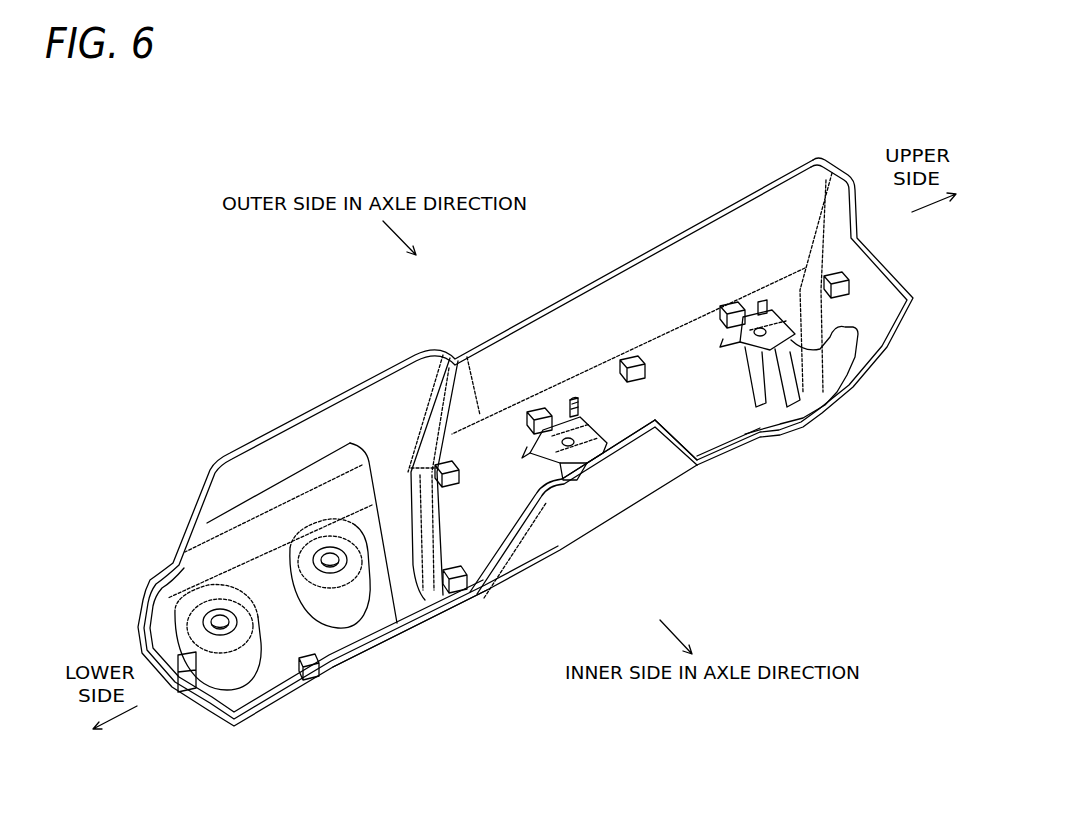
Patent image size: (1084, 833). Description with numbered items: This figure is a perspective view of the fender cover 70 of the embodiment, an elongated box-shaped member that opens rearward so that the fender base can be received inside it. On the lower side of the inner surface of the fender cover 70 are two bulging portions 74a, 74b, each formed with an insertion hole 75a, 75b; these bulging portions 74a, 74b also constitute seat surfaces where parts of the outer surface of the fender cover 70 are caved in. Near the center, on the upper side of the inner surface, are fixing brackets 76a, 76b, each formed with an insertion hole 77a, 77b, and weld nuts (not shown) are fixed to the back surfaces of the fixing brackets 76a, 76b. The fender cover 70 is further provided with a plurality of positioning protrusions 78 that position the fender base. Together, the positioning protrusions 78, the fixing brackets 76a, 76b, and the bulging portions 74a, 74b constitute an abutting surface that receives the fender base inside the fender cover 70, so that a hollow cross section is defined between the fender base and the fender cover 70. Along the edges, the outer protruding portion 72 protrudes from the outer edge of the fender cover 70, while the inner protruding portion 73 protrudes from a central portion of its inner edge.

The fender cover 70 is at (333, 343).
The outer protruding portion 72 is at (481, 363).
The inner protruding portion 73 is at (603, 490).
The bulging portion 74a is at (373, 630).
The bulging portion 74b is at (247, 667).
The insertion hole 75a is at (333, 545).
The insertion hole 75b is at (222, 603).
The fixing bracket 76a is at (782, 298).
The fixing bracket 76b is at (582, 402).
The insertion hole 77a is at (750, 315).
The insertion hole 77b is at (560, 413).
The positioning protrusion 78 is at (532, 405).